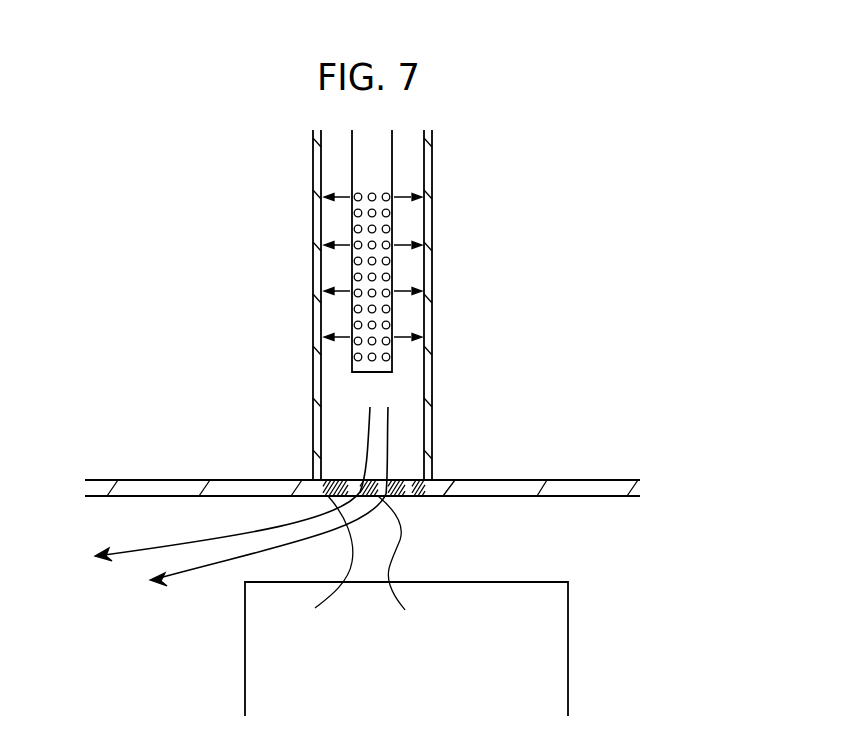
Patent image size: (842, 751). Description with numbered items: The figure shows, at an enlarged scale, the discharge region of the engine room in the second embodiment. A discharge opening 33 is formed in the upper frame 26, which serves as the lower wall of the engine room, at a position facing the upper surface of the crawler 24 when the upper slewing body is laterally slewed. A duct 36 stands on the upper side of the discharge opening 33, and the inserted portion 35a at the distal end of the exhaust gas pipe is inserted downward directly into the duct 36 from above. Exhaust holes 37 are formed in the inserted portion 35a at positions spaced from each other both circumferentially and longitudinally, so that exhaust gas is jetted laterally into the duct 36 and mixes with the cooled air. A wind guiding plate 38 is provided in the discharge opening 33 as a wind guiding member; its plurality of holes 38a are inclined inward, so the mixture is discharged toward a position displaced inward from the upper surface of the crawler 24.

The crawler 24 is at (568, 647).
The upper frame 26 is at (178, 480).
The discharge opening 33 is at (232, 526).
The inserted portion 35a is at (392, 160).
The duct 36 is at (313, 357).
The exhaust holes 37 is at (354, 229).
The wind guiding plate 38 is at (291, 526).
The holes 38a is at (408, 480).